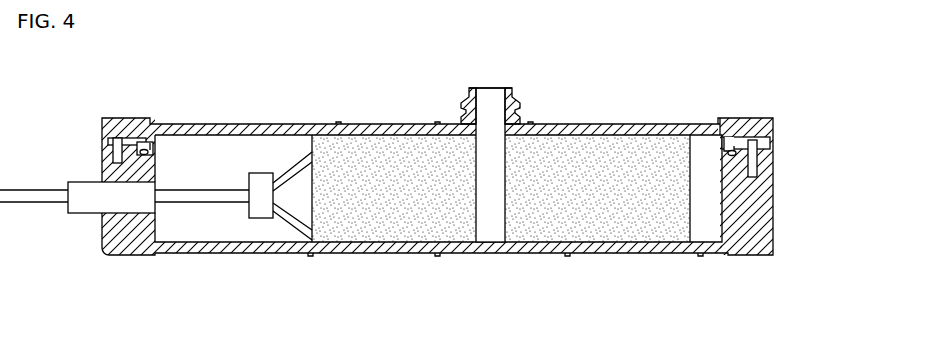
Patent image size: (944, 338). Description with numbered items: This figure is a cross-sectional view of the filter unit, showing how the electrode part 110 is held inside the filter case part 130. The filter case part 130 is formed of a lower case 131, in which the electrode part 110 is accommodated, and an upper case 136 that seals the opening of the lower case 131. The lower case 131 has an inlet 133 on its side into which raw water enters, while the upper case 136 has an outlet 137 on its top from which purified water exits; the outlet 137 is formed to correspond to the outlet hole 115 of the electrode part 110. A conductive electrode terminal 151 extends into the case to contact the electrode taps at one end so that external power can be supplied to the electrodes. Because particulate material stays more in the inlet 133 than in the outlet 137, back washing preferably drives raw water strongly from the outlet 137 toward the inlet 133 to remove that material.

The electrode part 110 is at (645, 228).
The outlet hole 115 is at (493, 228).
The filter case part 130 is at (507, 186).
The lower case 131 is at (773, 178).
The inlet 133 is at (85, 205).
The upper case 136 is at (773, 126).
The outlet 137 is at (500, 100).
The electrode terminal 151 is at (214, 198).